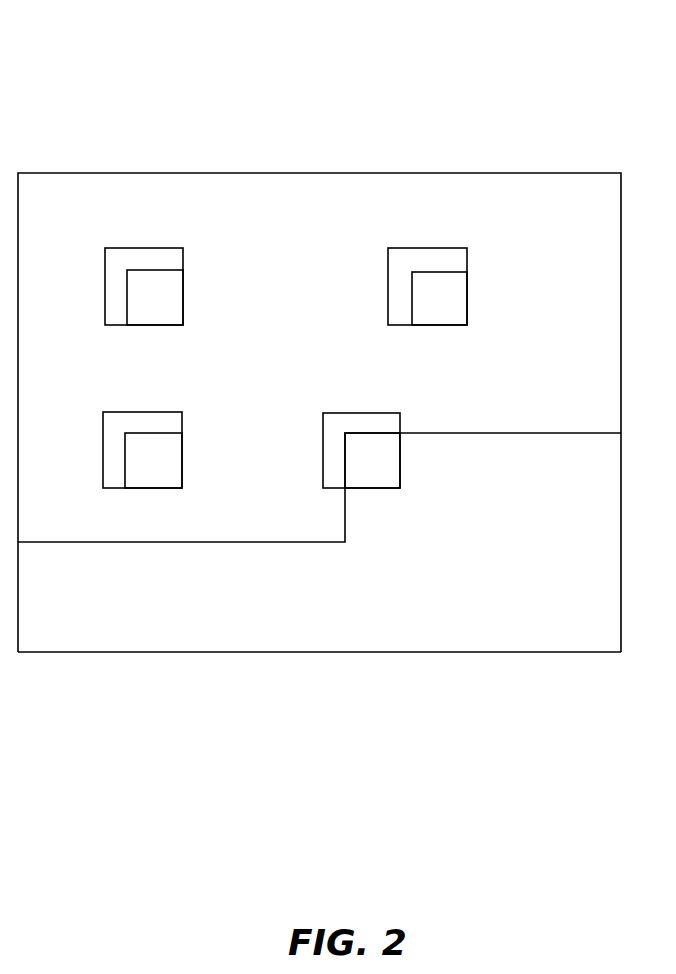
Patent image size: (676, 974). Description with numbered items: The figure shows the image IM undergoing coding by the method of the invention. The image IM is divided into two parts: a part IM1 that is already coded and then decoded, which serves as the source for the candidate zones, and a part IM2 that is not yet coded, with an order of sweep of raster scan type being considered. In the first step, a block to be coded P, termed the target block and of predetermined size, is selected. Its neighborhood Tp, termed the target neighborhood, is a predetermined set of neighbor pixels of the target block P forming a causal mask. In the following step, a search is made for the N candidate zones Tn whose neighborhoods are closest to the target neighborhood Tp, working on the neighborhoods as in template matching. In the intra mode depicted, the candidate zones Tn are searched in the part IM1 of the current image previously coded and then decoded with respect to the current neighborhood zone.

The image IM is at (130, 82).
The already coded part of the image IM1 is at (533, 172).
The not yet coded part of the image IM2 is at (540, 652).
The candidate zone Tn is at (412, 248).
The target neighborhood Tp is at (323, 450).
The target block P is at (376, 488).